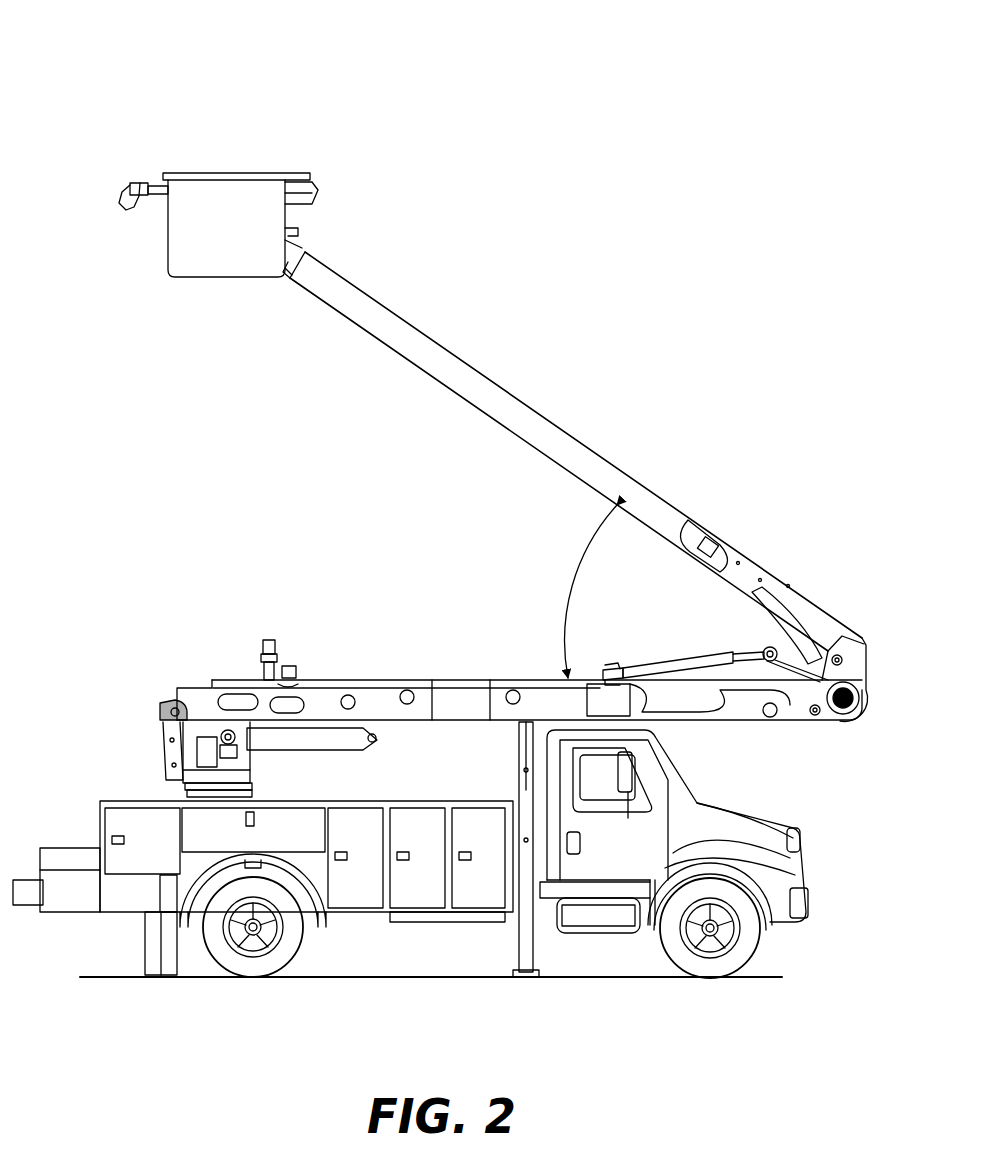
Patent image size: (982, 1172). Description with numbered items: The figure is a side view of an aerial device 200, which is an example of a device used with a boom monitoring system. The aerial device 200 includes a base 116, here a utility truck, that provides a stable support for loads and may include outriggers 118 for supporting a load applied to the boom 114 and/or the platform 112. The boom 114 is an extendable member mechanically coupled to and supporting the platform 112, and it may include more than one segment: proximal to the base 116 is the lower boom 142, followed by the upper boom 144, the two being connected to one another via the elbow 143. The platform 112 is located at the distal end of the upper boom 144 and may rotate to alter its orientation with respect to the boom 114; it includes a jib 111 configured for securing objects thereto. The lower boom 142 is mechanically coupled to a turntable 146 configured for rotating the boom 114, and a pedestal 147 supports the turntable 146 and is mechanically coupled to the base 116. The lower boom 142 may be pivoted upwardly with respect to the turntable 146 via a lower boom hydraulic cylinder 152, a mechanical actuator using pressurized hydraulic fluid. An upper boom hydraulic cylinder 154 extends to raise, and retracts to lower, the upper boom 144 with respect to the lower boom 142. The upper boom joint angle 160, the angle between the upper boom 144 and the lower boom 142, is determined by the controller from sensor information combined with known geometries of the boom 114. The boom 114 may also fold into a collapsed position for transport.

The aerial device 200 is at (97, 78).
The jib 111 is at (152, 183).
The platform 112 is at (226, 278).
The boom 114 is at (402, 414).
The base 116 is at (313, 1018).
The outriggers 118 is at (150, 938).
The lower boom 142 is at (388, 678).
The elbow 143 is at (840, 710).
The upper boom 144 is at (517, 399).
The turntable 146 is at (165, 728).
The pedestal 147 is at (185, 790).
The lower boom hydraulic cylinder 152 is at (330, 735).
The upper boom hydraulic cylinder 154 is at (663, 663).
The upper boom joint angle 160 is at (573, 585).